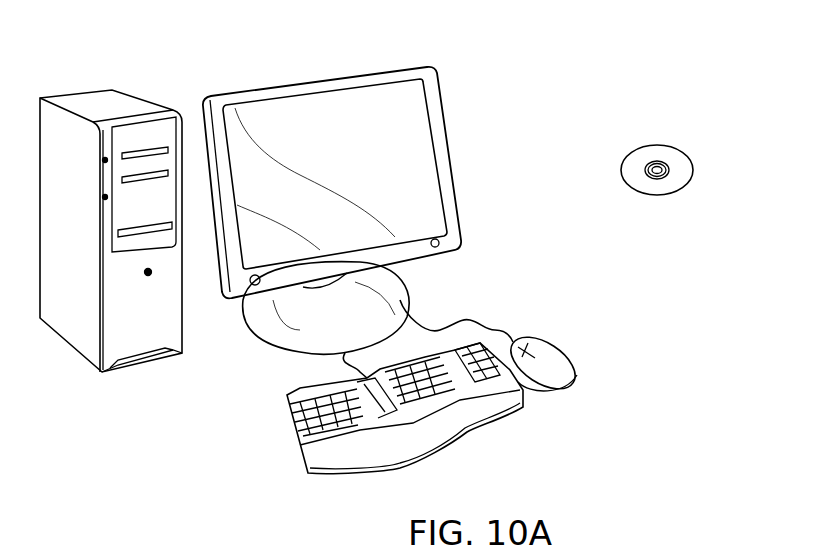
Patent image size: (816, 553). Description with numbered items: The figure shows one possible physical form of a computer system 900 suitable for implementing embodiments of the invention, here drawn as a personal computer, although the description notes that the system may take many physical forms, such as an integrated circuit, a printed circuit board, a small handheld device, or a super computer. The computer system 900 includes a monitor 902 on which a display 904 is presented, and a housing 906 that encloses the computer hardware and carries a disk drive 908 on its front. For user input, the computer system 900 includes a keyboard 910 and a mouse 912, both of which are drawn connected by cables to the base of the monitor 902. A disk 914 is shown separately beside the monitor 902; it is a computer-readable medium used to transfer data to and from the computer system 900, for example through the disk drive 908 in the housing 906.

The computer system 900 is at (575, 52).
The monitor 902 is at (453, 178).
The display 904 is at (403, 113).
The housing 906 is at (97, 102).
The disk drive 908 is at (158, 225).
The keyboard 910 is at (300, 445).
The mouse 912 is at (565, 352).
The disk 914 is at (675, 147).